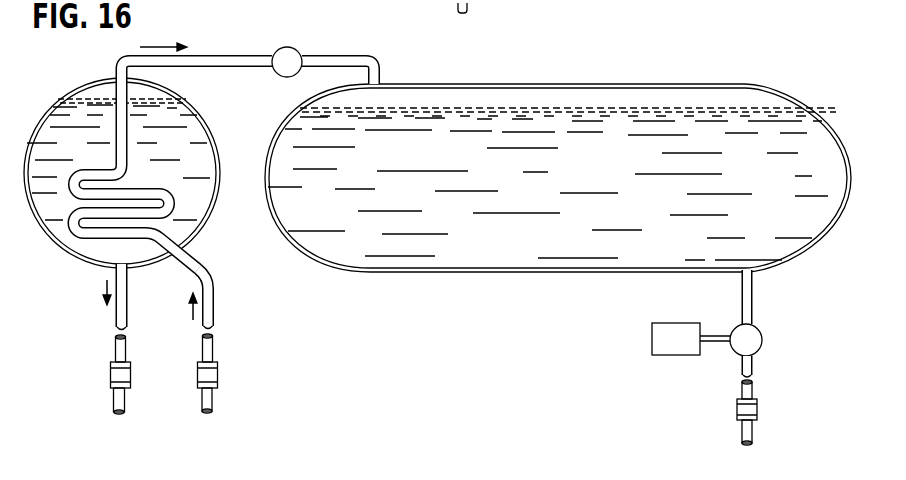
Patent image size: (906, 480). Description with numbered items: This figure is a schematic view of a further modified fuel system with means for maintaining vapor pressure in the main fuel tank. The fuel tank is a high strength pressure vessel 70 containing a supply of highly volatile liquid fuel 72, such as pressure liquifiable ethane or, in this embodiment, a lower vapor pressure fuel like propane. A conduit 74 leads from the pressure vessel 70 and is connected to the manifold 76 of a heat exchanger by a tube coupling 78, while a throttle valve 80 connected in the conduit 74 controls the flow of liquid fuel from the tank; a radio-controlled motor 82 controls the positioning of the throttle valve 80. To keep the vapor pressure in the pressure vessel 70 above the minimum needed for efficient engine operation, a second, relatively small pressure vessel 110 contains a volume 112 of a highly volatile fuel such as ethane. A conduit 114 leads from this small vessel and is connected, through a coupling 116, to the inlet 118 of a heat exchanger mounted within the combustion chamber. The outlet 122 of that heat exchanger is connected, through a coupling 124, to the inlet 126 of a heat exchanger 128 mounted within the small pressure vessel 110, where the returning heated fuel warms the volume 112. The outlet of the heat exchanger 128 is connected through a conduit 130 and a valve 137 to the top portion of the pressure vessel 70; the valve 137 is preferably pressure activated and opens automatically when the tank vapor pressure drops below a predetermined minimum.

The pressure vessel 70 is at (535, 84).
The liquid fuel 72 is at (604, 110).
The conduit 74 is at (752, 303).
The manifold 76 is at (742, 432).
The tube coupling 78 is at (757, 410).
The throttle valve 80 is at (764, 338).
The radio-controlled motor 82 is at (652, 338).
The second pressure vessel 110 is at (88, 80).
The volume of highly volatile fuel 112 is at (58, 216).
The conduit 114 is at (117, 317).
The coupling 116 is at (110, 380).
The inlet 118 is at (125, 407).
The outlet 122 is at (214, 408).
The coupling 124 is at (218, 375).
The inlet 126 is at (214, 306).
The heat exchanger 128 is at (173, 201).
The conduit 130 is at (228, 58).
The valve 137 is at (295, 48).